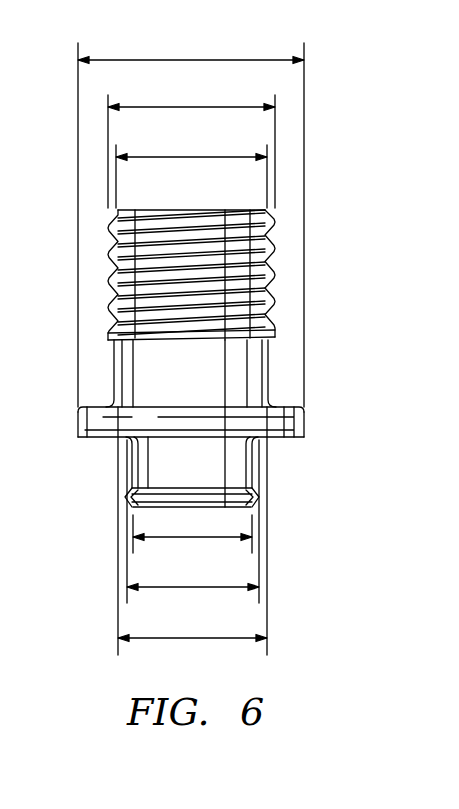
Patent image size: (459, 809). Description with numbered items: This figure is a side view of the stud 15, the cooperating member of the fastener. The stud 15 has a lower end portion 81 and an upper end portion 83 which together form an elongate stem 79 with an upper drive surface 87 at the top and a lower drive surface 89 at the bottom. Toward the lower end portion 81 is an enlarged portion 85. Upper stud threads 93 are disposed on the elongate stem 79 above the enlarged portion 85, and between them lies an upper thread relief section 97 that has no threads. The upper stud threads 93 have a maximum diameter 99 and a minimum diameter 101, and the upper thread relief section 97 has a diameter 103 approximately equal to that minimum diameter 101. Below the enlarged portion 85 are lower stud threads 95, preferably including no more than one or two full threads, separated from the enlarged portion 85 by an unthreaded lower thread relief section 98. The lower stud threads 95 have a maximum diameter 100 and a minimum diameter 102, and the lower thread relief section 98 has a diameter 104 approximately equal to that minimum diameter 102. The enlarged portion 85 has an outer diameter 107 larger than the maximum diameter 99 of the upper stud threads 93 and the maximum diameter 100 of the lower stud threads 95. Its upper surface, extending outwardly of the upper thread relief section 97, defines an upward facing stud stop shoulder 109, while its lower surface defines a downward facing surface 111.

The stud 15 is at (318, 98).
The elongate stem 79 is at (270, 388).
The lower end portion 81 is at (297, 455).
The upper end portion 83 is at (287, 205).
The enlarged portion 85 is at (303, 410).
The upper drive surface 87 is at (180, 208).
The lower drive surface 89 is at (237, 510).
The upper stud threads 93 is at (274, 262).
The lower stud threads 95 is at (127, 490).
The upper thread relief section 97 is at (115, 397).
The lower thread relief section 98 is at (254, 478).
The maximum diameter of upper stud threads 99 is at (192, 107).
The maximum diameter of lower stud threads 100 is at (207, 590).
The minimum diameter of upper stud threads 101 is at (190, 157).
The minimum diameter of lower stud threads 102 is at (193, 540).
The diameter of upper thread relief section 103 is at (188, 642).
The diameter of lower thread relief section 104 is at (193, 540).
The outer diameter of enlarged portion 107 is at (220, 58).
The stud stop shoulder 109 is at (102, 408).
The downward facing surface 111 is at (97, 440).